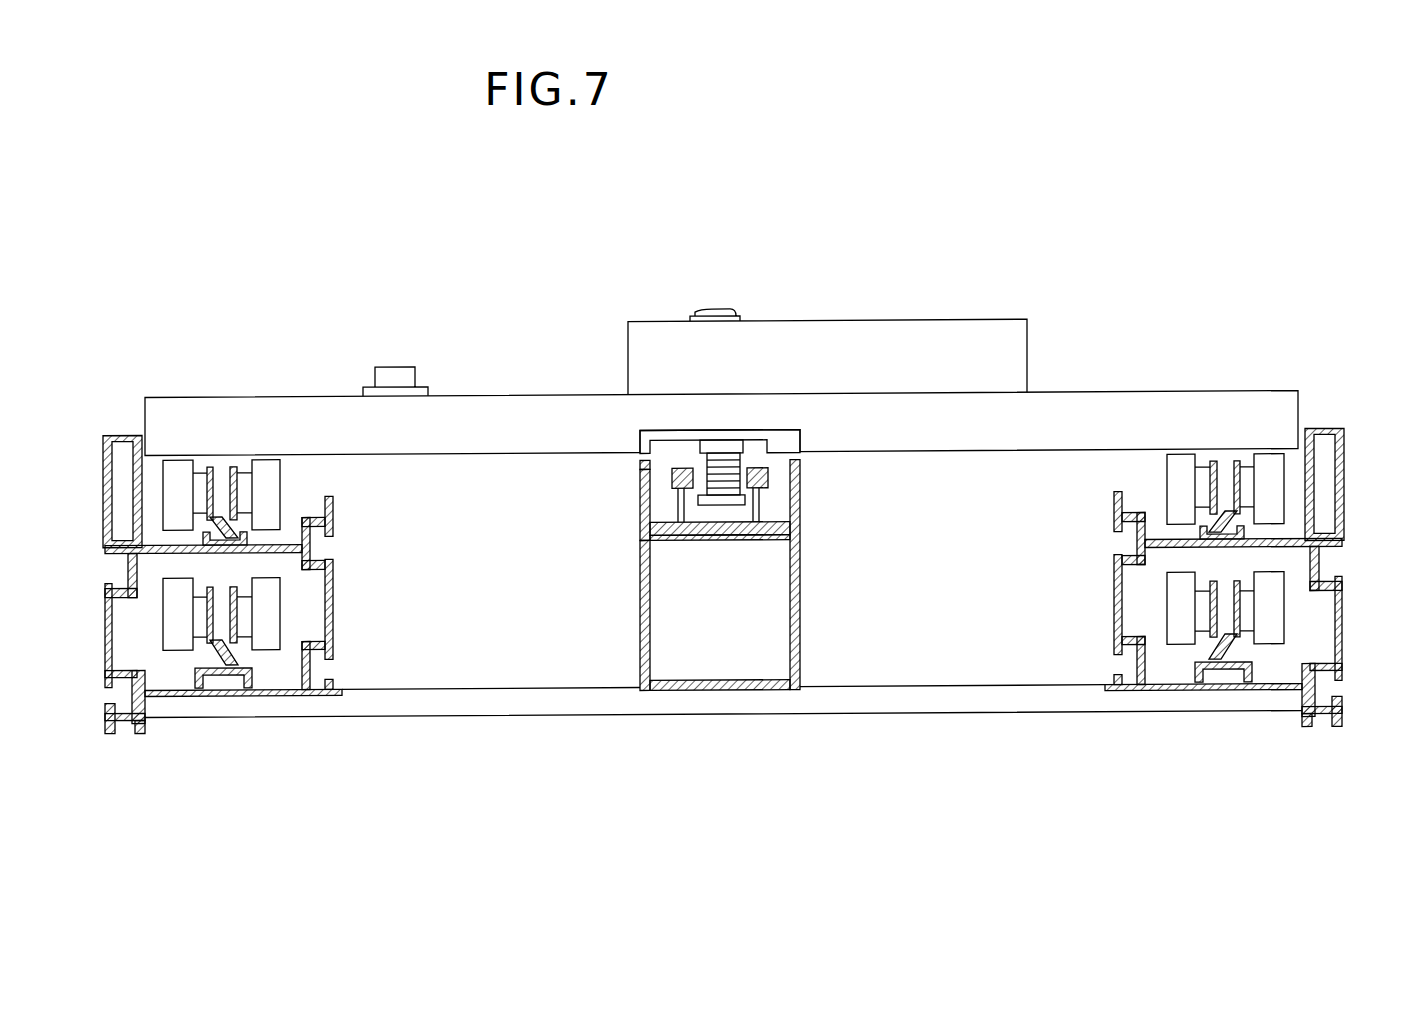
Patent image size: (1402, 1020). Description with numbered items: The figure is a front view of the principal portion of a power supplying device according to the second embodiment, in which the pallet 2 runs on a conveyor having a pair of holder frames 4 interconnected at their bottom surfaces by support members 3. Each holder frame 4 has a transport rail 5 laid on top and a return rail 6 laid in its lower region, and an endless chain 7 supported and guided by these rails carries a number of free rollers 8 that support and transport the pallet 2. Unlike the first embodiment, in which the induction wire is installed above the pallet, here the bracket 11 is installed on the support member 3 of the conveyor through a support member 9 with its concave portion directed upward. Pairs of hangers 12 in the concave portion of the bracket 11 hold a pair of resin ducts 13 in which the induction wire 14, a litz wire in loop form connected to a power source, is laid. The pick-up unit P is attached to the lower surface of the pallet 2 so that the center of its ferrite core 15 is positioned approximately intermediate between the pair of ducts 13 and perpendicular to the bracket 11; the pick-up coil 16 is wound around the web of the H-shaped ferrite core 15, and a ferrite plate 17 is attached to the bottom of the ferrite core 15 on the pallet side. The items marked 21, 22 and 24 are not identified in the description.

The pallet 2 is at (1250, 398).
The support member 3 is at (890, 713).
The holder frame 4 is at (107, 644).
The transport rail 5 is at (224, 537).
The return rail 6 is at (224, 689).
The endless chain 7 is at (217, 485).
The free roller 8 is at (172, 482).
The support member 9 is at (802, 603).
The bracket 11 is at (793, 525).
The hanger 12 is at (767, 510).
The duct 13 is at (770, 488).
The induction wire 14 is at (768, 477).
The ferrite core 15 is at (642, 512).
The pick-up coil 16 is at (642, 460).
The ferrite plate 17 is at (655, 440).
The housing 21 is at (925, 325).
The cap 22 is at (728, 312).
The stop 24 is at (398, 372).
The pick-up unit P is at (768, 450).